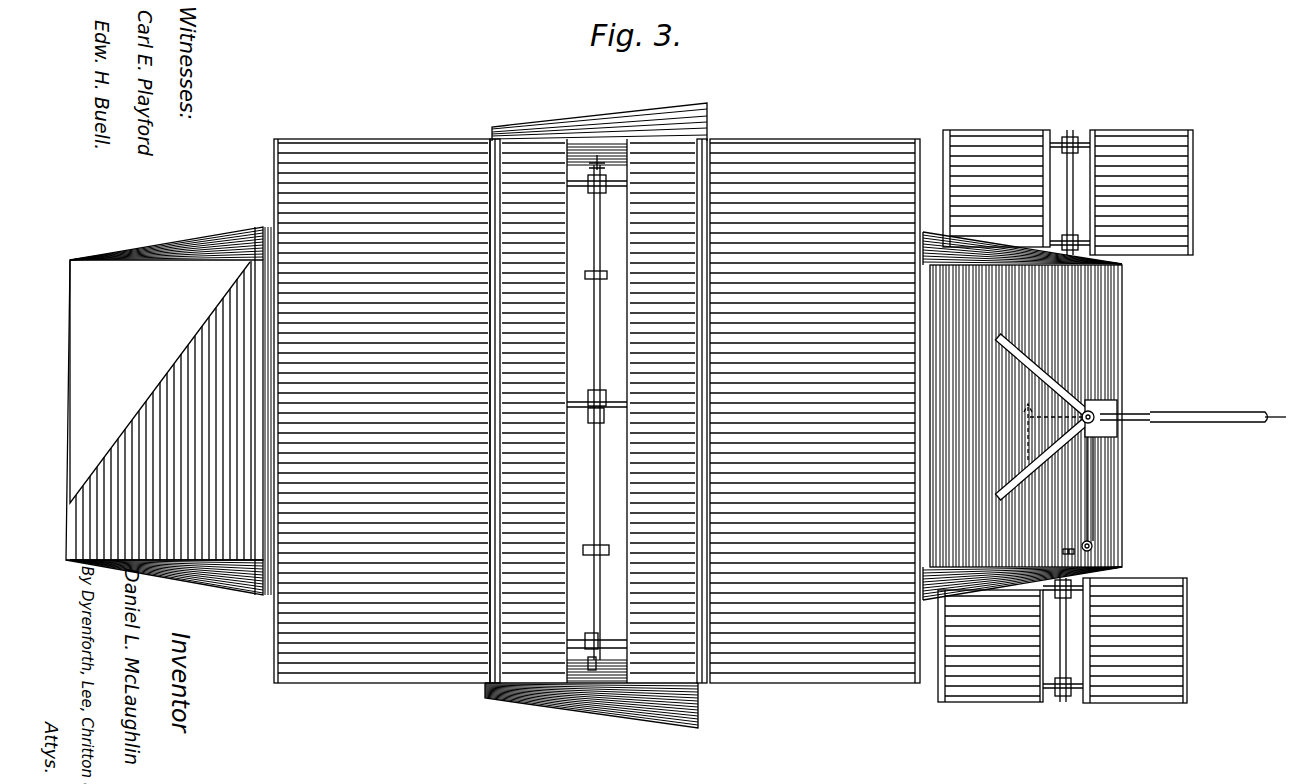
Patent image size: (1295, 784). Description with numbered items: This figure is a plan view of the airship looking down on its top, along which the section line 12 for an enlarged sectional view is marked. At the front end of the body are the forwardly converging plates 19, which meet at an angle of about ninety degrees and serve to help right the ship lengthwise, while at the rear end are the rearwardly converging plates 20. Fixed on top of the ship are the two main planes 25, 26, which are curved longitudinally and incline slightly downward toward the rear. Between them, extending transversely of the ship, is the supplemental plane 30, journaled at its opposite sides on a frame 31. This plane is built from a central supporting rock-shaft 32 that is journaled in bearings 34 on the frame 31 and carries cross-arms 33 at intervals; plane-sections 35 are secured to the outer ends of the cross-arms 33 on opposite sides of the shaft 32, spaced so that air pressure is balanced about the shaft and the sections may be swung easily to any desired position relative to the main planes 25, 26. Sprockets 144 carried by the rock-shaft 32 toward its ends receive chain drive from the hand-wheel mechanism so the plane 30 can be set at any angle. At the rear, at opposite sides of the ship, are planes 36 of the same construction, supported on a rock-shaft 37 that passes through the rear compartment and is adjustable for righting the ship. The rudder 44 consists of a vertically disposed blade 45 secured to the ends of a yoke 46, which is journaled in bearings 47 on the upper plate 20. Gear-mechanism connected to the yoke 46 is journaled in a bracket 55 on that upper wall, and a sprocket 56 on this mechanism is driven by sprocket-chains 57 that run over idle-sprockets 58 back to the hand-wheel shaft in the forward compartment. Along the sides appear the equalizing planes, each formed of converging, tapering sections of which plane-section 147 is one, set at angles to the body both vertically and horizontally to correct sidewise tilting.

The section line 12 is at (1040, 432).
The forwardly converging plates 19 is at (168, 411).
The rearwardly converging plates 20 is at (1112, 508).
The main plane 25 is at (594, 411).
The main plane 26 is at (773, 411).
The supplemental plane 30 is at (665, 660).
The frame 31 is at (585, 184).
The rock-shaft 32 is at (604, 205).
The cross-arms 33 is at (581, 163).
The bearings 34 is at (606, 185).
The plane-sections 35 is at (525, 152).
The planes 36 is at (1118, 130).
The rock-shaft 37 is at (1073, 177).
The rudder 44 is at (1208, 404).
The blade 45 is at (1250, 412).
The yoke 46 is at (1130, 422).
The bearings 47 is at (1065, 388).
The bracket 55 is at (1097, 405).
The sprocket 56 is at (1116, 416).
The sprocket-chains 57 is at (1095, 490).
The idle-sprockets 58 is at (1093, 545).
The sprockets 144 is at (608, 548).
The plane-section 147 is at (690, 120).